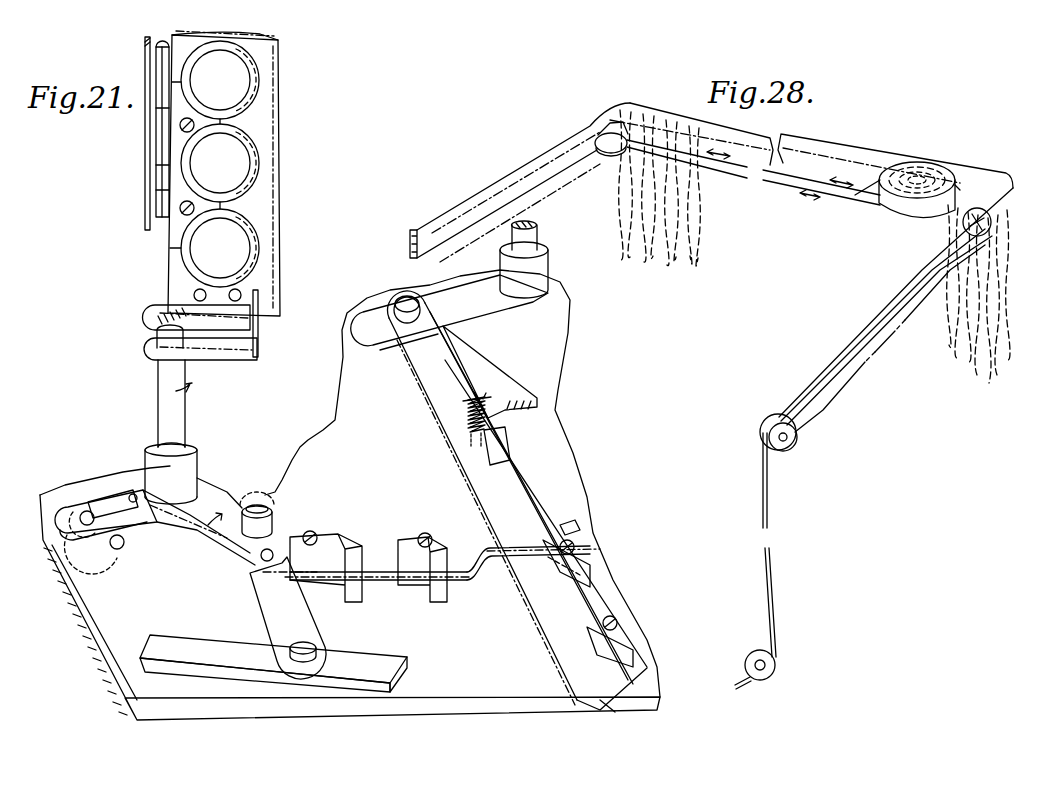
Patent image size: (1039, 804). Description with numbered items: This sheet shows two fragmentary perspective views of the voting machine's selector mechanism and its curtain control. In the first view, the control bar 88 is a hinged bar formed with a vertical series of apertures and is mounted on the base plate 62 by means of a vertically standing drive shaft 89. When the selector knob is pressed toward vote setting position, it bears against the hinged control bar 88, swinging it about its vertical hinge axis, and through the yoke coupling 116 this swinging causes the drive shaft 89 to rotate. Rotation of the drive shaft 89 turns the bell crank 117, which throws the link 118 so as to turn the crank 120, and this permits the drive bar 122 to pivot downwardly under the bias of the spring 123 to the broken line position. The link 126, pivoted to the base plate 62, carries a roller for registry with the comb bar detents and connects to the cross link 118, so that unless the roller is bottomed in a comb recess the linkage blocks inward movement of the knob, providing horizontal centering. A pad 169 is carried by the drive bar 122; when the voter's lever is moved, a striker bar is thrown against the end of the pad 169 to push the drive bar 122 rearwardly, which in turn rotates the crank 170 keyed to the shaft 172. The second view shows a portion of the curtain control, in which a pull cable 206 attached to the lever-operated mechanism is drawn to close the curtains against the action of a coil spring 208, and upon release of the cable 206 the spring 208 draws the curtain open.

In FIG. 21, the control bar 88 is at (268, 118).
In FIG. 21, the yoke coupling 116 is at (258, 352).
In FIG. 21, the drive shaft 89 is at (182, 418).
In FIG. 21, the bell crank 117 is at (205, 490).
In FIG. 21, the link 118 is at (300, 447).
In FIG. 21, the base plate 62 is at (194, 594).
In FIG. 21, the crank 120 is at (377, 570).
In FIG. 21, the link 126 is at (352, 662).
In FIG. 21, the drive bar 122 is at (597, 590).
In FIG. 21, the pad 169 is at (615, 712).
In FIG. 21, the crank 170 is at (369, 320).
In FIG. 21, the shaft 172 is at (532, 236).
In FIG. 21, the spring 123 is at (487, 423).
In FIG. 28, the coil spring 208 is at (937, 173).
In FIG. 28, the pull cable 206 is at (767, 508).